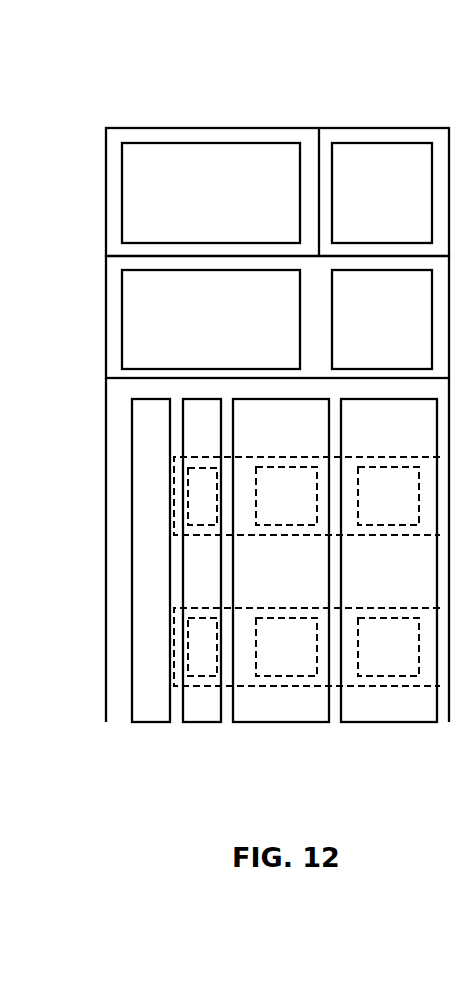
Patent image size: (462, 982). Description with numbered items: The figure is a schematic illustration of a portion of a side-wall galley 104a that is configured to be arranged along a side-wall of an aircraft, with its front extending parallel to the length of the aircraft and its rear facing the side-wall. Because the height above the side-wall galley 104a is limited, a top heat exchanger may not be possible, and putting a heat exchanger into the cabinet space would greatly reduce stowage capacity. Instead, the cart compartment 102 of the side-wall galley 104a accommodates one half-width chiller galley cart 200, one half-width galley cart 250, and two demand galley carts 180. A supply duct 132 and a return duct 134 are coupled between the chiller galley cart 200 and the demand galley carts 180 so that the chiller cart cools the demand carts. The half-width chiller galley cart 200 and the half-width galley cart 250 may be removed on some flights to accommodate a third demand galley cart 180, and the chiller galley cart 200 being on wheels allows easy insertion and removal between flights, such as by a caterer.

The side-wall galley 104a is at (146, 99).
The cart compartment 102 is at (238, 591).
The supply duct 132 is at (229, 530).
The return duct 134 is at (229, 616).
The half-width galley cart 250 is at (152, 712).
The half-width chiller galley cart 200 is at (202, 720).
The demand galley cart 180 is at (277, 722).